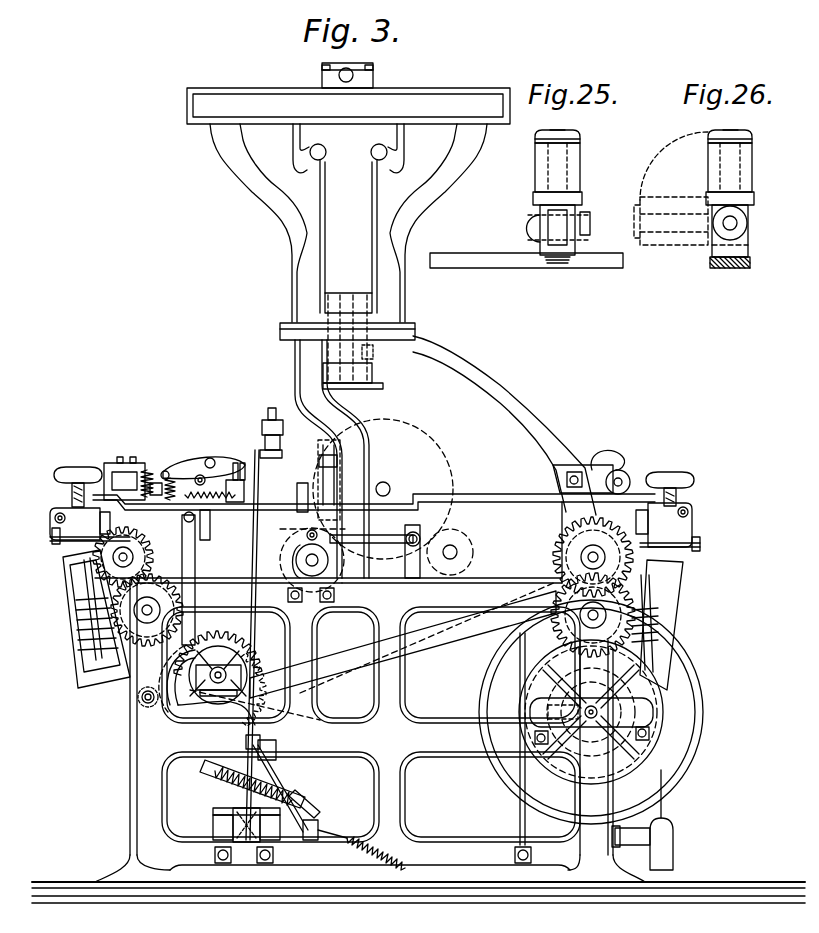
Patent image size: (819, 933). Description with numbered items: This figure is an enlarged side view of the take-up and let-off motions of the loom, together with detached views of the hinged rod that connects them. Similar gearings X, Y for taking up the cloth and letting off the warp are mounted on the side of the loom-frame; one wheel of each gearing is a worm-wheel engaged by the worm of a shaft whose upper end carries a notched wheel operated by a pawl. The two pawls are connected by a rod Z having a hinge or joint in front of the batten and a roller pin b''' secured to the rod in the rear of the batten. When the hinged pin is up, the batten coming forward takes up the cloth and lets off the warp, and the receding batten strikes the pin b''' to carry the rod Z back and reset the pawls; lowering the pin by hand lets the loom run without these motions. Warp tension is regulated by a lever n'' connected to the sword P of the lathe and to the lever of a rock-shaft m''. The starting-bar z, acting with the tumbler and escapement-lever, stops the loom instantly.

The take-up gearing X is at (66, 598).
The let-off gearing Y is at (670, 605).
The rod Z is at (374, 511).
The sword P is at (250, 615).
The pin with roller b''' is at (316, 480).
The rock-shaft m'' is at (591, 465).
The lever n'' is at (347, 654).
The starting-bar z is at (302, 807).